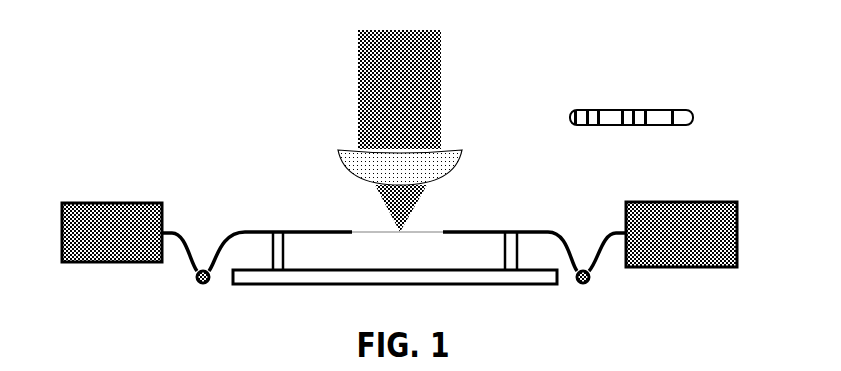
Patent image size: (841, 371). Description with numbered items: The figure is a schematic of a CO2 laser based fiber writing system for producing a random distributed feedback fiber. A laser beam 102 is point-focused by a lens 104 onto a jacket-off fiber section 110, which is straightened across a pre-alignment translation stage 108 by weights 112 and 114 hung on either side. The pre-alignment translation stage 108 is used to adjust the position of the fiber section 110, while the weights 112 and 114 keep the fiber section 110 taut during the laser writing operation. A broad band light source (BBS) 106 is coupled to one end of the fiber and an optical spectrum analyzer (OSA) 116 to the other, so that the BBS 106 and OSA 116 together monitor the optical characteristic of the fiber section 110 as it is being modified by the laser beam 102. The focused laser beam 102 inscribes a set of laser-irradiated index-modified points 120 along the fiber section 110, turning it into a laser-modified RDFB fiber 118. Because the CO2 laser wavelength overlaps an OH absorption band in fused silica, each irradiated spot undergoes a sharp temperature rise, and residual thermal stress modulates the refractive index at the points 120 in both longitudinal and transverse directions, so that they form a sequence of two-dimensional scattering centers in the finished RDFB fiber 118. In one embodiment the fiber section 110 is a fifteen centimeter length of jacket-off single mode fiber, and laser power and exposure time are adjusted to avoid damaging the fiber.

The laser beam 102 is at (442, 39).
The lens 104 is at (464, 154).
The broad band light source (BBS) 106 is at (110, 196).
The pre-alignment translation stage 108 is at (250, 288).
The jacket-off fiber section 110 is at (361, 228).
The weight 112 is at (200, 266).
The weight 114 is at (582, 266).
The optical spectrum analyzer (OSA) 116 is at (665, 199).
The laser-modified RDFB fiber 118 is at (575, 106).
The laser-irradiated index-modified points 120 is at (648, 106).